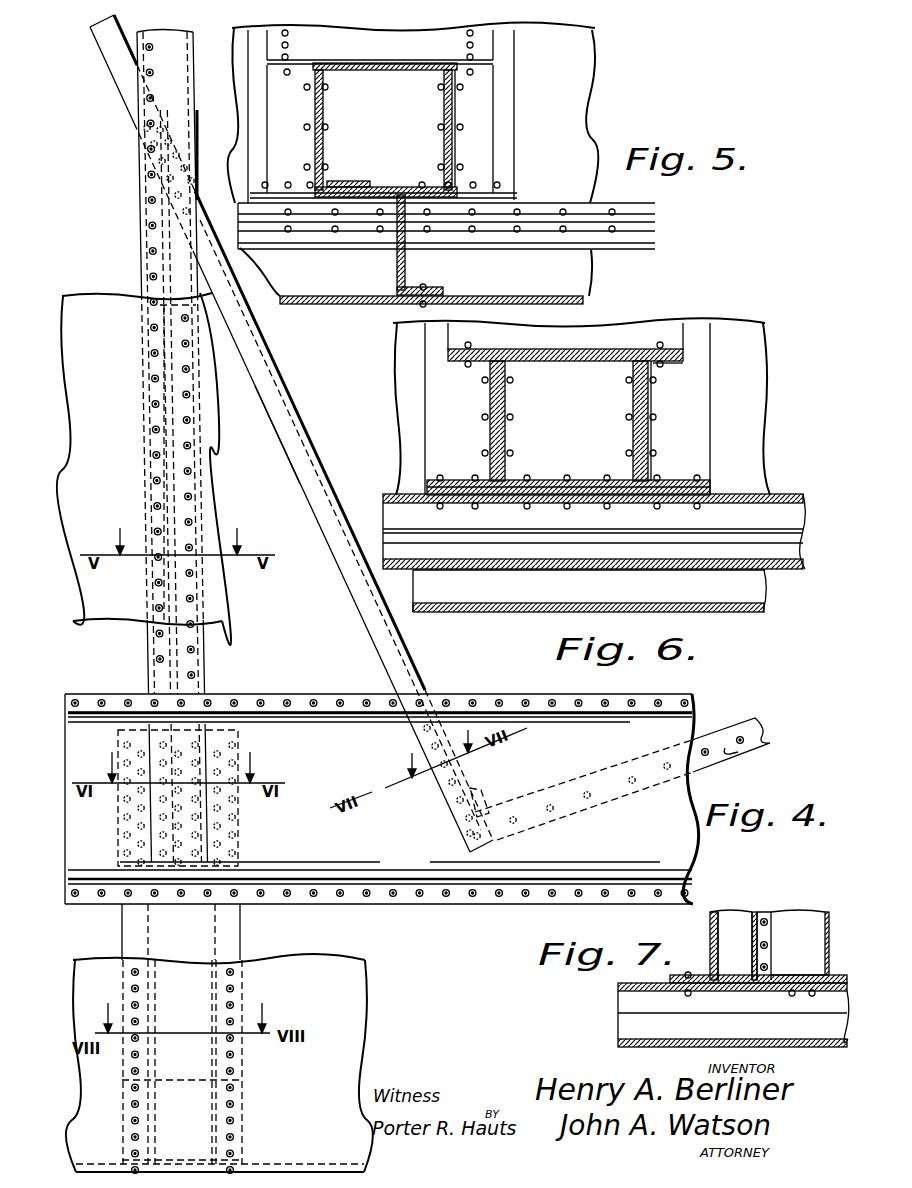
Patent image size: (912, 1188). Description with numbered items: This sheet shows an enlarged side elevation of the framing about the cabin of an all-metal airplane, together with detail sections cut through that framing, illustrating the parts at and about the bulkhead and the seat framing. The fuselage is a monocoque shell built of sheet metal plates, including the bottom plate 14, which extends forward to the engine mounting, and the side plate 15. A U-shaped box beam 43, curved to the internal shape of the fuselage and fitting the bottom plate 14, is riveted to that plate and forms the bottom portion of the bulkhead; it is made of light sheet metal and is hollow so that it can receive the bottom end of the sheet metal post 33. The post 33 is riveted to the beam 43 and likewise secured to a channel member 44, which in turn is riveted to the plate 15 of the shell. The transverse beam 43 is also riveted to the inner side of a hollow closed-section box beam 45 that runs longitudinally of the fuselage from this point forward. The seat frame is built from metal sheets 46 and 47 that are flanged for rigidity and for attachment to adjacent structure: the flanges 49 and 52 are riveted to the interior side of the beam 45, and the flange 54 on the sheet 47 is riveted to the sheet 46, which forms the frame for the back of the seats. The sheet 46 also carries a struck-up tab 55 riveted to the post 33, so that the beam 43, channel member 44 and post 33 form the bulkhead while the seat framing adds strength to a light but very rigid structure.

In FIG. 4, the bottom plate 14 is at (345, 992).
In FIG. 5, the plate 15 is at (583, 300).
In FIG. 6, the plate 15 is at (747, 610).
In FIG. 4, the plate 15 is at (94, 298).
In FIG. 5, the sheet metal post 33 is at (455, 142).
In FIG. 6, the sheet metal post 33 is at (625, 440).
In FIG. 4, the sheet metal post 33 is at (195, 48).
In FIG. 5, the U-shaped box beam 43 is at (455, 115).
In FIG. 6, the U-shaped box beam 43 is at (650, 404).
In FIG. 4, the U-shaped box beam 43 is at (245, 932).
In FIG. 5, the channel member 44 is at (405, 262).
In FIG. 4, the channel member 44 is at (196, 331).
In FIG. 5, the box beam 45 is at (660, 204).
In FIG. 6, the box beam 45 is at (809, 569).
In FIG. 4, the box beam 45 is at (467, 694).
In FIG. 7, the box beam 45 is at (601, 1013).
In FIG. 4, the metal sheet 46 is at (296, 404).
In FIG. 7, the metal sheet 46 is at (733, 918).
In FIG. 4, the metal sheet 47 is at (727, 725).
In FIG. 7, the metal sheet 47 is at (796, 930).
In FIG. 4, the flange 49 is at (282, 416).
In FIG. 7, the flange 49 is at (689, 975).
In FIG. 4, the flange 52 is at (738, 753).
In FIG. 4, the flange 54 is at (483, 788).
In FIG. 7, the flange 54 is at (761, 913).
In FIG. 4, the struck-up flange or tab 55 is at (197, 110).